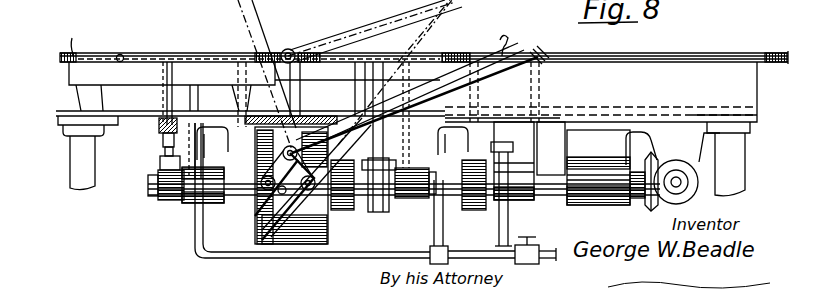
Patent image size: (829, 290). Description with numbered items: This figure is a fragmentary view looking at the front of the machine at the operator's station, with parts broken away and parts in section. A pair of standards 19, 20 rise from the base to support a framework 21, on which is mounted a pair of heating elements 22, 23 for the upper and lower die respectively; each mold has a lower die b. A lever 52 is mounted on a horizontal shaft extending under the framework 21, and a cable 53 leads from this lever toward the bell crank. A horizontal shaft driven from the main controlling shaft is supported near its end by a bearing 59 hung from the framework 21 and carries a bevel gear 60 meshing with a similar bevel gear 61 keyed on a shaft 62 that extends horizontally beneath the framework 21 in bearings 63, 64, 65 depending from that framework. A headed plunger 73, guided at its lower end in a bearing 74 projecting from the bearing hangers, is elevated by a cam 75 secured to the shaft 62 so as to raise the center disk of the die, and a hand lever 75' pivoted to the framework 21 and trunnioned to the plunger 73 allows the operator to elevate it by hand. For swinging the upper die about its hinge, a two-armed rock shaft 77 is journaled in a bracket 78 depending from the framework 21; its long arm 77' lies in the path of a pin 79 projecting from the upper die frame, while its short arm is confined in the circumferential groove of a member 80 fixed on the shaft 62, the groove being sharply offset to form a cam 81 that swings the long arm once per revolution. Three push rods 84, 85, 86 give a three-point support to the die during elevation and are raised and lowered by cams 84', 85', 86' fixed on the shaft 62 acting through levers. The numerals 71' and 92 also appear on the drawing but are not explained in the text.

The standard 19 is at (70, 172).
The standard 20 is at (745, 152).
The framework 21 is at (75, 113).
The heating element 22 is at (70, 75).
The heating element 23 is at (304, 78).
The lever 52 is at (551, 148).
The cable 53 is at (510, 220).
The bearing 59 is at (673, 147).
The bevel gear 60 is at (694, 198).
The bevel gear 61 is at (653, 207).
The shaft 62 is at (580, 205).
The bearing 63 is at (598, 167).
The bearing 64 is at (453, 141).
The bearing 65 is at (212, 143).
The rod 71' is at (267, 75).
The headed plunger 73 is at (165, 98).
The bearing 74 is at (160, 152).
The cam 75 is at (288, 119).
The hand lever 75' is at (164, 73).
The two-armed rock shaft 77 is at (272, 187).
The long arm 77' is at (421, 91).
The bracket 78 is at (283, 146).
The lug or pin 79 is at (121, 56).
The member 80 is at (318, 244).
The cam 81 is at (268, 200).
The push rod 84 is at (375, 31).
The cam 84' is at (346, 201).
The push rod 85 is at (410, 90).
The cam 85' is at (474, 199).
The push rod 86 is at (395, 72).
The cam 86' is at (380, 156).
The lever 92 is at (508, 5).
The lower die b is at (67, 44).